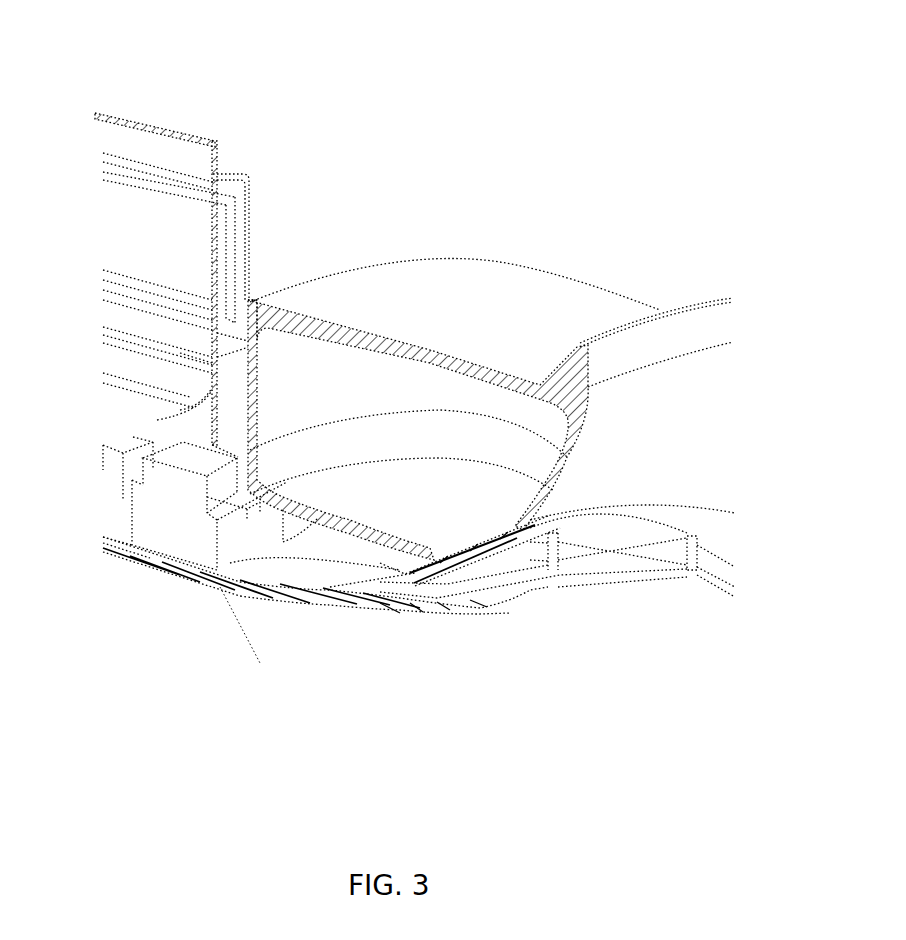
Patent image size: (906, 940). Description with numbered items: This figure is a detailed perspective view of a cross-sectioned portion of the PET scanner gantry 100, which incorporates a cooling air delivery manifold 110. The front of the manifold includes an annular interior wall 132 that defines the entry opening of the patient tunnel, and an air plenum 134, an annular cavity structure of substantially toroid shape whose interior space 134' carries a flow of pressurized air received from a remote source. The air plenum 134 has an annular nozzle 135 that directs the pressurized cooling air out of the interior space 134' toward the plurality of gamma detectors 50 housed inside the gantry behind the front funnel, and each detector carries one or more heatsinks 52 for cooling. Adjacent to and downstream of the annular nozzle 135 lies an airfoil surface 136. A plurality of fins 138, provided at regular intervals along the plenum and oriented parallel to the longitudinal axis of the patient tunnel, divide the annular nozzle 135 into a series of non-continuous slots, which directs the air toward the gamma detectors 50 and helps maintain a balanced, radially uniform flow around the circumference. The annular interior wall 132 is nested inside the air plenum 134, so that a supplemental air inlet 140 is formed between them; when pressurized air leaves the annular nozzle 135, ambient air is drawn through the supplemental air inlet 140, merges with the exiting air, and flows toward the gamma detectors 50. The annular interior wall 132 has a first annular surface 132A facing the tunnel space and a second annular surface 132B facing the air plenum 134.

The PET scanner gantry 100 is at (457, 66).
The cooling air delivery manifold 110 is at (714, 270).
The annular interior wall 132 is at (485, 600).
The first annular surface 132A is at (193, 585).
The second annular surface 132B is at (272, 570).
The air plenum 134 is at (454, 349).
The interior space 134' is at (408, 452).
The annular nozzle 135 is at (412, 562).
The airfoil surface 136 is at (348, 537).
The fins 138 is at (670, 560).
The supplemental air inlet 140 is at (462, 589).
The gamma detectors 50 is at (157, 538).
The heatsinks 52 is at (157, 472).